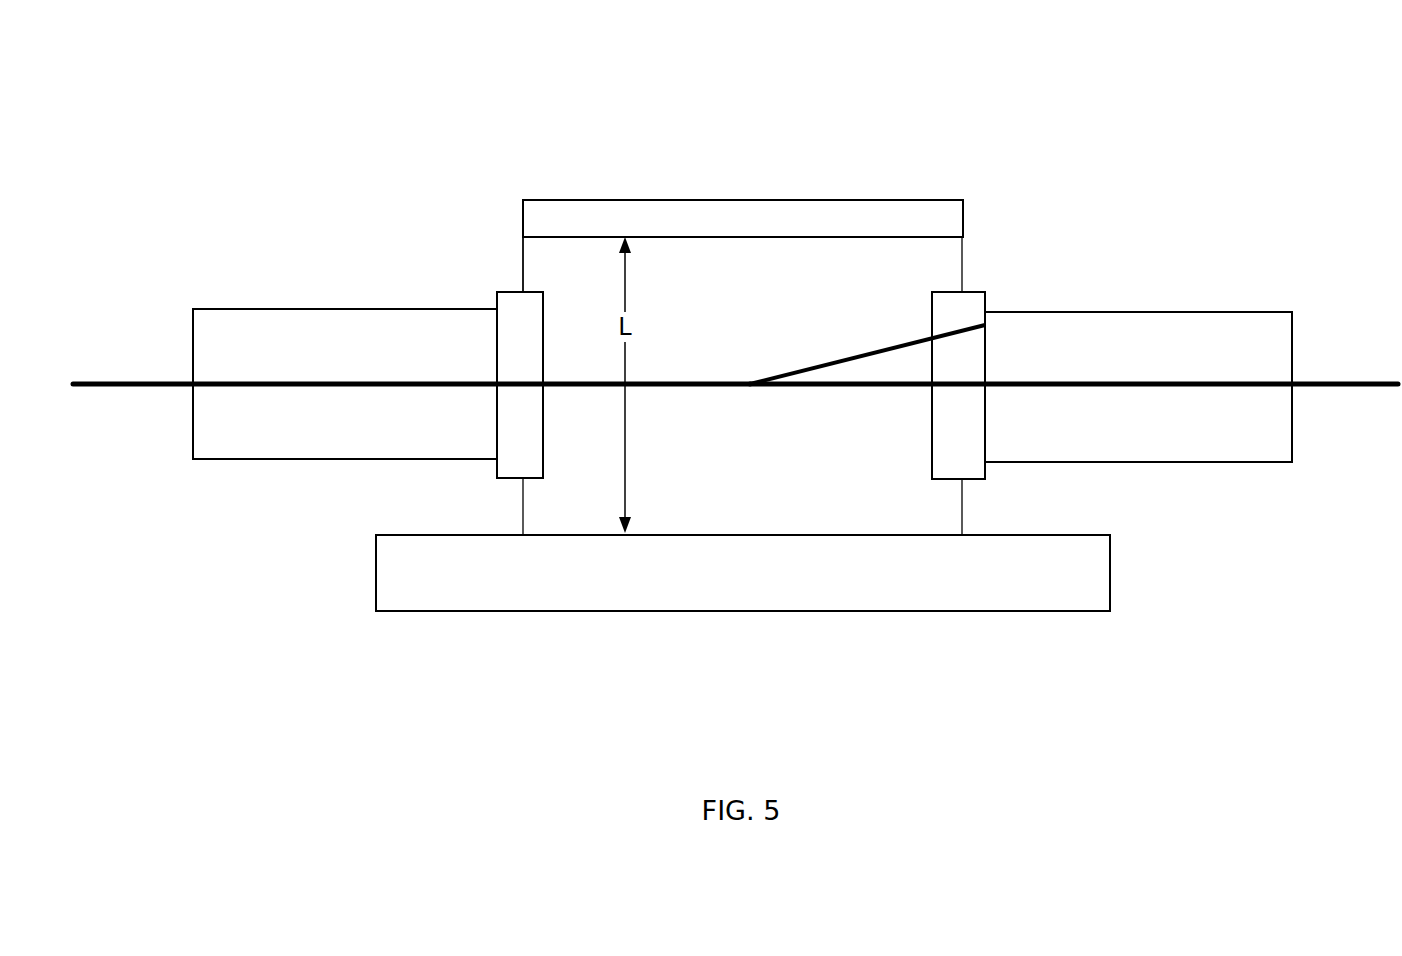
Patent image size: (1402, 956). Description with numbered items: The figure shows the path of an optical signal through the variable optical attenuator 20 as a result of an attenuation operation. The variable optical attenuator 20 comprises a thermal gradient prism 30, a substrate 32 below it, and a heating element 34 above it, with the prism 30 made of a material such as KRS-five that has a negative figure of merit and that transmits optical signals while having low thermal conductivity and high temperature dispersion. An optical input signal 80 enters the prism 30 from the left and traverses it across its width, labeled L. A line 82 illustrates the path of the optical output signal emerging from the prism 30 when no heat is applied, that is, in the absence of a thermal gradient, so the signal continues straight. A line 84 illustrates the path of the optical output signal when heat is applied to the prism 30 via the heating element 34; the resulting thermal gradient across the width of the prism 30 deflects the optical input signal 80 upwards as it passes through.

The variable optical attenuator 20 is at (1260, 98).
The thermal gradient prism 30 is at (523, 255).
The substrate 32 is at (587, 612).
The heating element 34 is at (782, 200).
The optical input signal 80 is at (148, 380).
The line 82 is at (1325, 390).
The line 84 is at (872, 353).